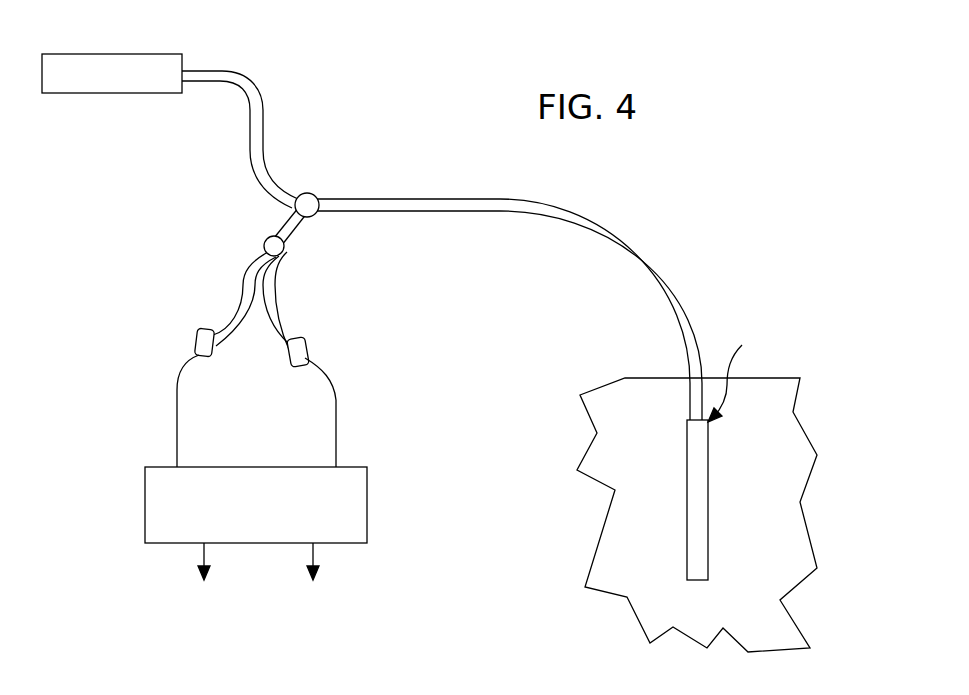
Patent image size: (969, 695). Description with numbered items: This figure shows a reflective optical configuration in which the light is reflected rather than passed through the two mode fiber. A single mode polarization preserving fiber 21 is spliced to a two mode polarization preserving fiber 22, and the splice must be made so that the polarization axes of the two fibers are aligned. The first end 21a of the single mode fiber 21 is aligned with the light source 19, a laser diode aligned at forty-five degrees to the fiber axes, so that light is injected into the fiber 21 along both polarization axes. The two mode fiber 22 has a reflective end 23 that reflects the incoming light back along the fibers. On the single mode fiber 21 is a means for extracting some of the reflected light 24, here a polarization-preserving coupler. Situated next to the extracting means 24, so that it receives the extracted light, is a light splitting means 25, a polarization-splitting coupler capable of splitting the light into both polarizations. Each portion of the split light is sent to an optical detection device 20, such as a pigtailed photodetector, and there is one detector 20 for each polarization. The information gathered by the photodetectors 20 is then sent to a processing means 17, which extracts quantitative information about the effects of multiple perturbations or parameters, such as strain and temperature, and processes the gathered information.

The processing means 17 is at (145, 482).
The light source 19 is at (90, 54).
The optical detection device 20 is at (195, 333).
The single mode polarization preserving fiber 21 is at (483, 198).
The first end of the single mode fiber 21a is at (193, 68).
The two mode polarization preserving fiber 22 is at (708, 494).
The reflective end 23 is at (692, 580).
The means for extracting reflected light 24 is at (319, 198).
The light splitting means 25 is at (285, 248).